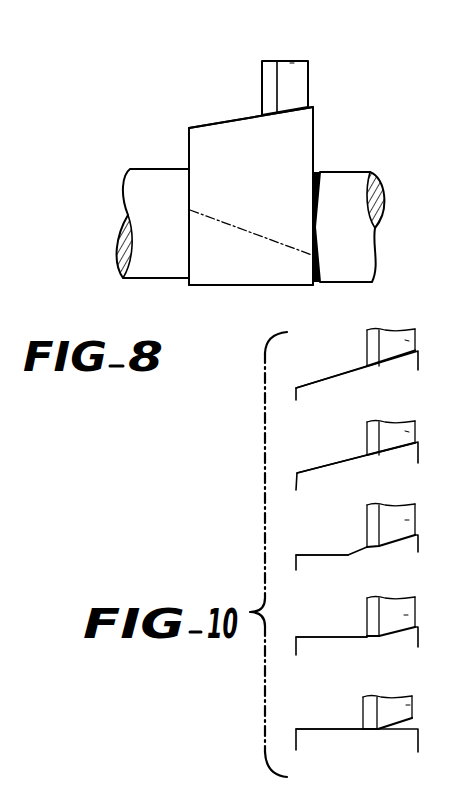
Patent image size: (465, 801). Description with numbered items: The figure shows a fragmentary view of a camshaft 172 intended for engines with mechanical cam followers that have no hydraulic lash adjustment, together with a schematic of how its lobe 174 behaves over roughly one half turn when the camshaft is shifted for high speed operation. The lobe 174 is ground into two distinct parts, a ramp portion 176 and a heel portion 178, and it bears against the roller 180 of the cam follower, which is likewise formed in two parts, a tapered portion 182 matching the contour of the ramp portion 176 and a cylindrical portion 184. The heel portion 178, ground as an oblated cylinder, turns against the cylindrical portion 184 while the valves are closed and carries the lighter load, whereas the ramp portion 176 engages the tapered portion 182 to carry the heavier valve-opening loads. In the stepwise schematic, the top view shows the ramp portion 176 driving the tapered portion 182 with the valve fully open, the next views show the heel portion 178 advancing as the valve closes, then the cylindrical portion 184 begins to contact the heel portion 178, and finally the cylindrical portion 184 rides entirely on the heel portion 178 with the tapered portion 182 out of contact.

In FIG. 8, the camshaft 172 is at (184, 160).
In FIG. 8, the lobe 174 is at (260, 198).
In FIG. 10, the lobe 174 is at (350, 548).
In FIG. 8, the ramp portion 176 is at (303, 130).
In FIG. 10, the ramp portion 176 is at (345, 367).
In FIG. 8, the heel portion 178 is at (203, 283).
In FIG. 10, the heel portion 178 is at (312, 470).
In FIG. 8, the roller 180 is at (302, 65).
In FIG. 10, the roller 180 is at (399, 514).
In FIG. 8, the tapered portion 182 is at (291, 63).
In FIG. 10, the tapered portion 182 is at (410, 341).
In FIG. 8, the cylindrical portion 184 is at (267, 70).
In FIG. 10, the cylindrical portion 184 is at (367, 345).